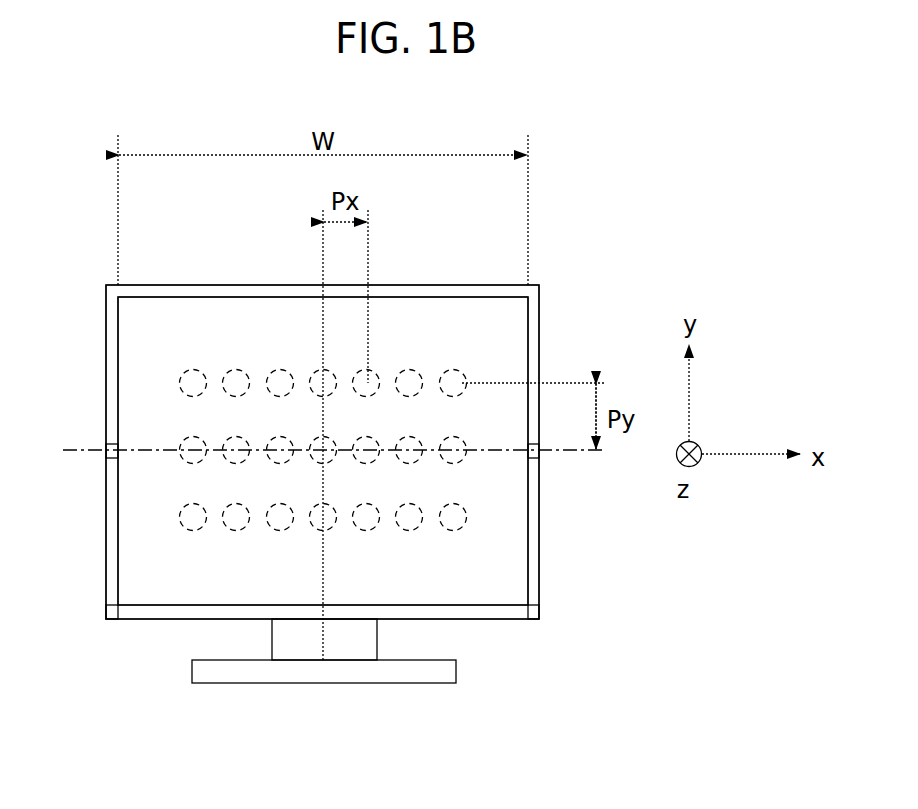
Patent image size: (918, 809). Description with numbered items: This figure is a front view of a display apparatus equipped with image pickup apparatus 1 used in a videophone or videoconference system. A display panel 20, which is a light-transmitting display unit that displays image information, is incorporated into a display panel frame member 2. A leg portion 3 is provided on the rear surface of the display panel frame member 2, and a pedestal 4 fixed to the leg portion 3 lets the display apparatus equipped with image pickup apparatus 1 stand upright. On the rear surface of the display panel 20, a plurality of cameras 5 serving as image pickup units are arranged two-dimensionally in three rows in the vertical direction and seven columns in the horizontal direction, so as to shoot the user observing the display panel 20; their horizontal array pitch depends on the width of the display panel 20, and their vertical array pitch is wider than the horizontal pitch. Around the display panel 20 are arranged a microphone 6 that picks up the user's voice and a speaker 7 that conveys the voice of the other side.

The display apparatus equipped with image pickup apparatus 1 is at (30, 240).
The display panel frame member 2 is at (537, 283).
The display panel 20 is at (412, 312).
The cameras 5 is at (191, 372).
The speaker 7 is at (106, 452).
The microphone 6 is at (106, 614).
The leg portion 3 is at (369, 637).
The pedestal 4 is at (456, 672).